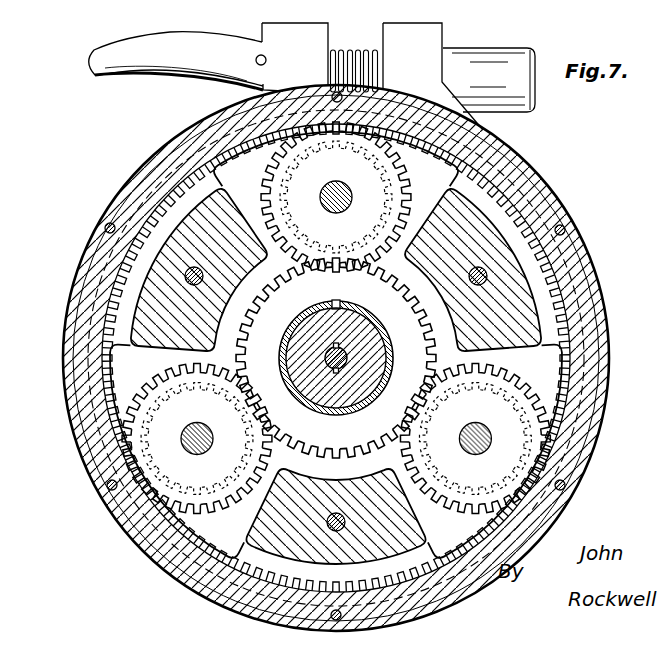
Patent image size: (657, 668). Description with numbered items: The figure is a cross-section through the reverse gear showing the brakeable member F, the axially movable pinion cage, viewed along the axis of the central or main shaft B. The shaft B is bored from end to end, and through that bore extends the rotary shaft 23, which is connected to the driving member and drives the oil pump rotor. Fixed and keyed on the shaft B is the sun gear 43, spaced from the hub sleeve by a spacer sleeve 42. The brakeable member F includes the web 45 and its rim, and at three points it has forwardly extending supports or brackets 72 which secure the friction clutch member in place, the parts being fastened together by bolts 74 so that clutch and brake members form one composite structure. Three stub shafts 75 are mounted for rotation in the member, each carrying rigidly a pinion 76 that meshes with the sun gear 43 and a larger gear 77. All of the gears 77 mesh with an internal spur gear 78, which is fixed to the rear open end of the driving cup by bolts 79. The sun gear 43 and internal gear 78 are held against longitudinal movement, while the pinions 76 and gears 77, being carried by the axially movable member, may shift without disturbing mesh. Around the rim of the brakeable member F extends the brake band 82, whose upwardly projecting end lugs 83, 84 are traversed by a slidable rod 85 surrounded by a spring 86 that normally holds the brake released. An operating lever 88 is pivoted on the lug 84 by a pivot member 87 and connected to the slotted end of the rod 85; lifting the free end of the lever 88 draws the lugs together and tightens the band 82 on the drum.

The operating lever 88 is at (172, 50).
The end lug 84 is at (276, 22).
The pivot member 87 is at (265, 58).
The spring 86 is at (338, 92).
The end lug 83 is at (400, 33).
The slidable rod 85 is at (372, 70).
The internal spur gear 78 is at (541, 181).
The web 45 is at (548, 207).
The bolts 79 is at (568, 230).
The brake band 82 is at (567, 268).
The brakeable member F is at (564, 318).
The supports 72 is at (519, 293).
The bolts 74 is at (338, 531).
The stub shafts 75 is at (338, 188).
The pinion 76 is at (348, 238).
The gear 77 is at (402, 198).
The sun gear 43 is at (270, 306).
The spacer sleeve 42 is at (388, 341).
The rotary shaft 23 is at (336, 358).
The central shaft B is at (381, 362).